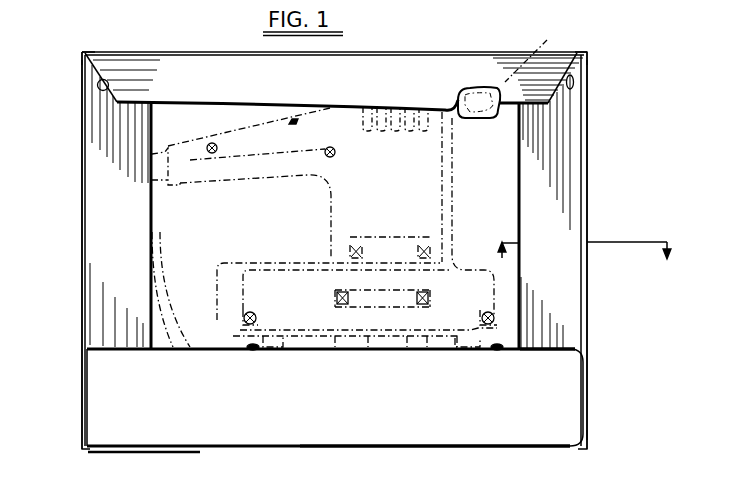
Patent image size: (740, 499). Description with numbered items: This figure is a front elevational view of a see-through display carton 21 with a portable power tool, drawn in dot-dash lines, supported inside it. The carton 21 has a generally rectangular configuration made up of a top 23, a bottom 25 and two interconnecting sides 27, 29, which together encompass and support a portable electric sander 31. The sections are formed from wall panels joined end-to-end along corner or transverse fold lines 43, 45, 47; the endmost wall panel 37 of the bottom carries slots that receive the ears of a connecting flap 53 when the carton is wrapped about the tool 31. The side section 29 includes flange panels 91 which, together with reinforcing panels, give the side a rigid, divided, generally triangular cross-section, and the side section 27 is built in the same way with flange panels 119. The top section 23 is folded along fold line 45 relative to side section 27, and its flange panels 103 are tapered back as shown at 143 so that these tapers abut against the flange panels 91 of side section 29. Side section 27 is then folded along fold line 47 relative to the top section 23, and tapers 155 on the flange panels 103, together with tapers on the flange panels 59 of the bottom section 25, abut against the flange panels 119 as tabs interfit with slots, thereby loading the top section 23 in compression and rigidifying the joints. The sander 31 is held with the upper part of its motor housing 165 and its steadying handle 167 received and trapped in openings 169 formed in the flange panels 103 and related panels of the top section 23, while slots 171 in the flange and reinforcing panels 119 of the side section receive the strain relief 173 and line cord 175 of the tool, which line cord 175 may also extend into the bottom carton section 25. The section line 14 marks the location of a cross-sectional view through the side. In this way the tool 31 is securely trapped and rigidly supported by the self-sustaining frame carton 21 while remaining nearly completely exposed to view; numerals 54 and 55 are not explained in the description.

The section line 14- 14 is at (586, 253).
The carton 21 is at (600, 135).
The top section 23 is at (449, 53).
The bottom section 25 is at (489, 448).
The side section 27 is at (83, 268).
The side section 29 is at (589, 222).
The portable electric sander 31 is at (453, 176).
The wall panel 37 is at (375, 448).
The transverse fold line 43 is at (587, 448).
The transverse fold line 45 is at (588, 50).
The transverse fold line 47 is at (87, 54).
The connecting flap 53 is at (107, 454).
The lower left corner 54 is at (82, 450).
The tray 55 is at (325, 420).
The flange panel 59 is at (548, 350).
The flange panel 91 is at (107, 171).
The flange panel 103 is at (194, 80).
The flange panel 119 is at (558, 275).
The taper 143 is at (570, 75).
The taper 155 is at (107, 81).
The motor housing 165 is at (360, 148).
The steadying handle 167 is at (542, 48).
The opening 169 is at (468, 89).
The slot 171 is at (150, 234).
The strain relief 173 is at (147, 168).
The line cord 175 is at (168, 300).